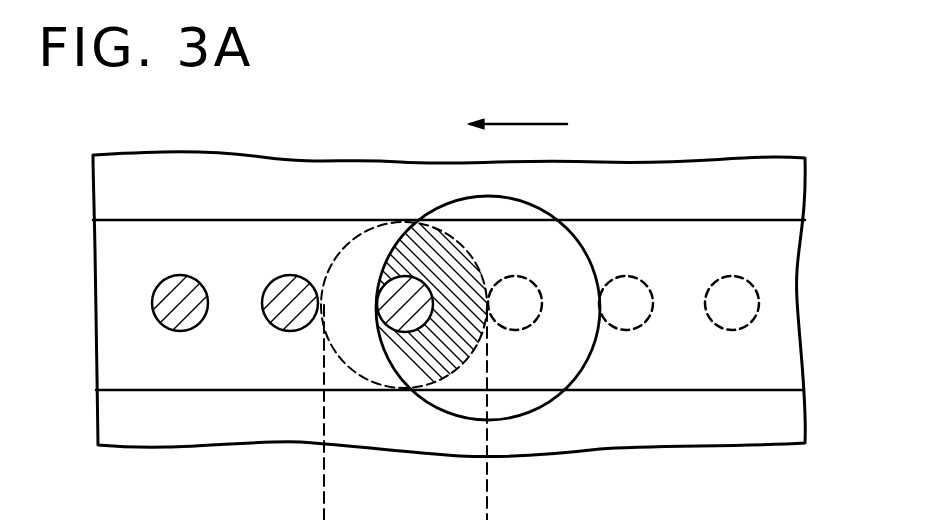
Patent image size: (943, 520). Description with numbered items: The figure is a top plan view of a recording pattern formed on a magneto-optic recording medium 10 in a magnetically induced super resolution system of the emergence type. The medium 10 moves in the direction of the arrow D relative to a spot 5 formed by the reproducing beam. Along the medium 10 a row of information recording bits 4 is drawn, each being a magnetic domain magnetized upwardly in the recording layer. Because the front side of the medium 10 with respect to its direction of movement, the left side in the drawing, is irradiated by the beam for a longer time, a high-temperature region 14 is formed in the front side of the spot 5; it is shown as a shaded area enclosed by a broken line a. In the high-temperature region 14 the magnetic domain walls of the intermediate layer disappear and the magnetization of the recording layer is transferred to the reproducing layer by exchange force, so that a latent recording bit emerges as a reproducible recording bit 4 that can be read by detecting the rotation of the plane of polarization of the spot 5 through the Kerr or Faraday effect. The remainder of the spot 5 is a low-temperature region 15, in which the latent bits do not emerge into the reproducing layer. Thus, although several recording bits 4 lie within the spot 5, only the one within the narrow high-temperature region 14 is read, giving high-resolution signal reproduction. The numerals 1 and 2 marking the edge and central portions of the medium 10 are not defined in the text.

The magneto-optic recording medium 10 is at (267, 157).
The edge portions of tape 1 is at (793, 192).
The central portion with perforations 2 is at (783, 303).
The recording bit 4 is at (397, 318).
The spot 5 is at (543, 207).
The high-temperature region 14 is at (453, 350).
The low-temperature region 15 is at (538, 368).
The broken line a is at (470, 266).
The arrow D is at (525, 123).